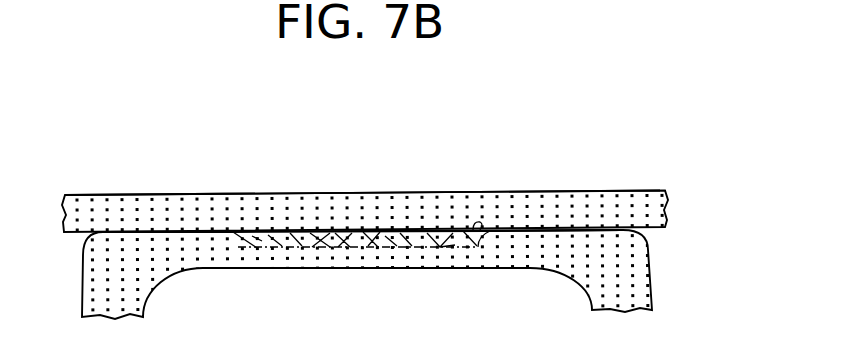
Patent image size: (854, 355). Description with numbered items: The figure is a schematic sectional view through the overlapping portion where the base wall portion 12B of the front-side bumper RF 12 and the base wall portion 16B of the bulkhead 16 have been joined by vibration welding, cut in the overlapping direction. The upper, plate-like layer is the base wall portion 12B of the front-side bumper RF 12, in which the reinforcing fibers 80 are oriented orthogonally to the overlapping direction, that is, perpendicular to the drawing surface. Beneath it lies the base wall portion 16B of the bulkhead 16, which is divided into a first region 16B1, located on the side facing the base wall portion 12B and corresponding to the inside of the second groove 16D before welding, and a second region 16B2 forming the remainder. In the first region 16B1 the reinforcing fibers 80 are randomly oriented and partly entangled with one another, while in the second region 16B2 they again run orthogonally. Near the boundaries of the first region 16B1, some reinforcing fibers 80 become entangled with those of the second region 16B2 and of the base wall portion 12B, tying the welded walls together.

The front-side bumper RF 12 is at (550, 171).
The base wall portion 12B is at (152, 195).
The bulkhead 16 is at (660, 289).
The base wall portion 16B is at (503, 268).
The first region 16B1 is at (355, 232).
The second region 16B2 is at (530, 258).
The second groove 16D is at (383, 247).
The reinforcing fibers 80 is at (326, 232).